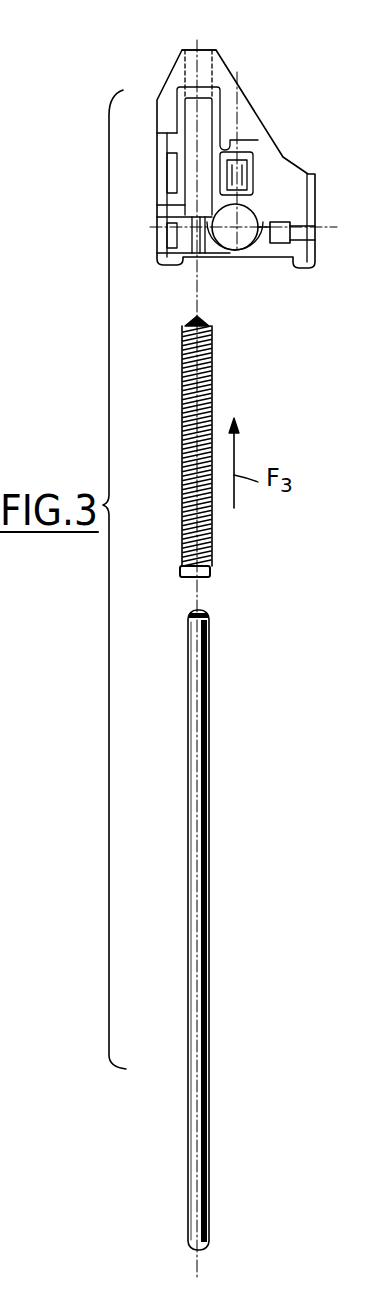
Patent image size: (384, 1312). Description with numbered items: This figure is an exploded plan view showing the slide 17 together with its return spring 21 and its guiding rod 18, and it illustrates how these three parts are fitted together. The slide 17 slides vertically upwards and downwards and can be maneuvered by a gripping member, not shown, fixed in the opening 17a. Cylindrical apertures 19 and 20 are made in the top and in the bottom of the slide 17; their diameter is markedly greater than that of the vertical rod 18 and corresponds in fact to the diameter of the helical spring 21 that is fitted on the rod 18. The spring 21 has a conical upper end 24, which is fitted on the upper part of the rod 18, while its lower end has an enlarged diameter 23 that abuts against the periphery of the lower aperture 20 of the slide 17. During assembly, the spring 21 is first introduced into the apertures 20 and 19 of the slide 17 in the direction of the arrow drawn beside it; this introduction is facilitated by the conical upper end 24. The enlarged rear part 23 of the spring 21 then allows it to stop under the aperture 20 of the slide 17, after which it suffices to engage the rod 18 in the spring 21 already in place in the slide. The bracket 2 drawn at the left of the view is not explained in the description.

The assembly 2 is at (0, 984).
The slide 17 is at (275, 172).
The opening 17a is at (250, 240).
The vertical rod 18 is at (208, 760).
The upper cylindrical aperture 19 is at (200, 63).
The lower cylindrical aperture 20 is at (208, 265).
The helical spring 21 is at (205, 367).
The enlarged-diameter lower end of the spring 23 is at (210, 572).
The conical upper end of the spring 24 is at (192, 320).